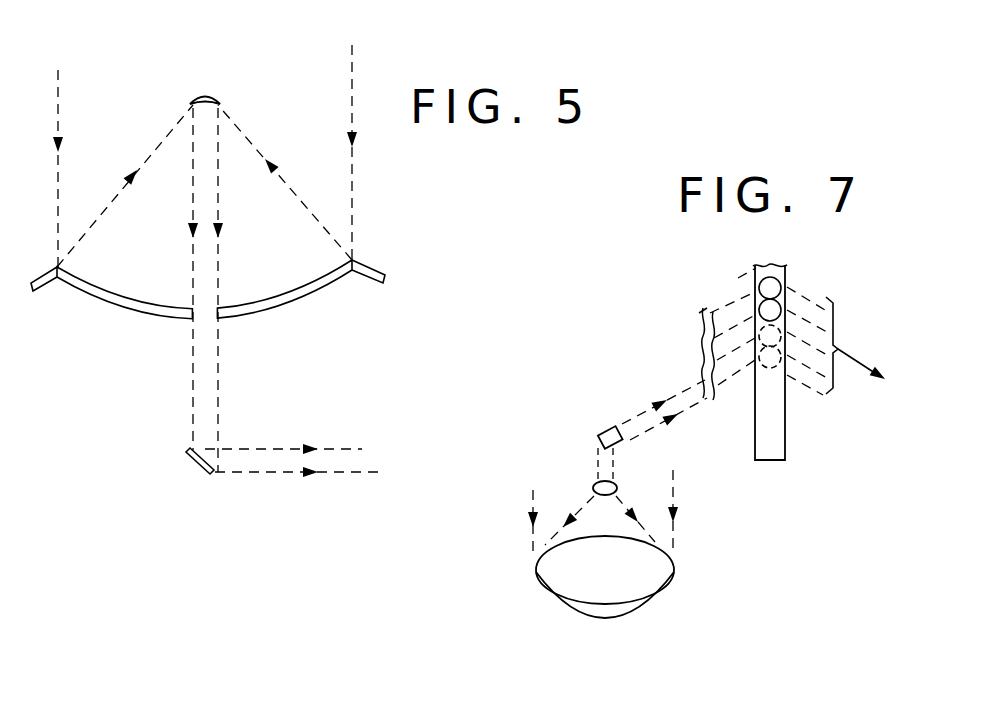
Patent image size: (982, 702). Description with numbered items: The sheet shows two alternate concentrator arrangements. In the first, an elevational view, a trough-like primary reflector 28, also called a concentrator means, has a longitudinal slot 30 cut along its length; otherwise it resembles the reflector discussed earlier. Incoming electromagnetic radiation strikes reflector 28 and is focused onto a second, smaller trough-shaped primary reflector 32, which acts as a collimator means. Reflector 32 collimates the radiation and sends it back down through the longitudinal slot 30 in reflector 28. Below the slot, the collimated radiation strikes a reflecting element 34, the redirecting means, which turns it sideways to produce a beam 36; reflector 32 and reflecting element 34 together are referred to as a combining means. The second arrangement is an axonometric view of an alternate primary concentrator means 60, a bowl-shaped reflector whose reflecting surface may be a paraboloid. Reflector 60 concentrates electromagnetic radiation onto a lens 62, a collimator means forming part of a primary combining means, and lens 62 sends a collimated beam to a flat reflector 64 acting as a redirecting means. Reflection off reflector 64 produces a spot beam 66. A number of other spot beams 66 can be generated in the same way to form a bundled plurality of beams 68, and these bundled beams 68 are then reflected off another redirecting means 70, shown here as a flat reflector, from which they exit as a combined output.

In FIG. 5, the primary reflector 28 is at (150, 310).
In FIG. 5, the longitudinal slot 30 is at (205, 316).
In FIG. 5, the primary reflector 32 is at (207, 97).
In FIG. 5, the reflecting element 34 is at (207, 473).
In FIG. 5, the beam 36 is at (250, 476).
In FIG. 7, the primary concentrator means 60 is at (613, 618).
In FIG. 7, the lens 62 is at (598, 486).
In FIG. 7, the flat reflector 64 is at (600, 426).
In FIG. 7, the spot beam 66 is at (628, 435).
In FIG. 7, the bundled plurality of beams 68 is at (728, 289).
In FIG. 7, the redirecting means 70 is at (757, 444).